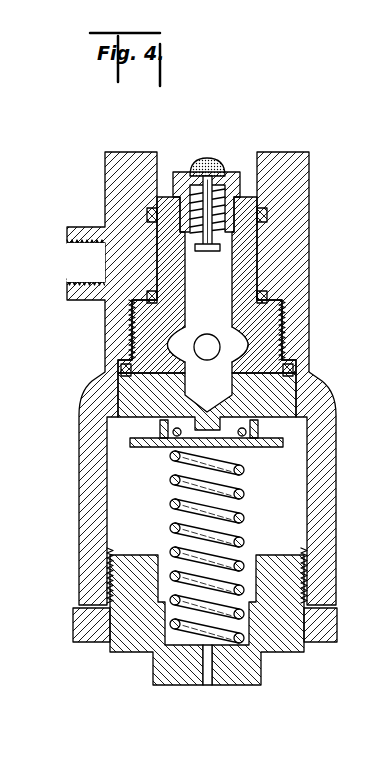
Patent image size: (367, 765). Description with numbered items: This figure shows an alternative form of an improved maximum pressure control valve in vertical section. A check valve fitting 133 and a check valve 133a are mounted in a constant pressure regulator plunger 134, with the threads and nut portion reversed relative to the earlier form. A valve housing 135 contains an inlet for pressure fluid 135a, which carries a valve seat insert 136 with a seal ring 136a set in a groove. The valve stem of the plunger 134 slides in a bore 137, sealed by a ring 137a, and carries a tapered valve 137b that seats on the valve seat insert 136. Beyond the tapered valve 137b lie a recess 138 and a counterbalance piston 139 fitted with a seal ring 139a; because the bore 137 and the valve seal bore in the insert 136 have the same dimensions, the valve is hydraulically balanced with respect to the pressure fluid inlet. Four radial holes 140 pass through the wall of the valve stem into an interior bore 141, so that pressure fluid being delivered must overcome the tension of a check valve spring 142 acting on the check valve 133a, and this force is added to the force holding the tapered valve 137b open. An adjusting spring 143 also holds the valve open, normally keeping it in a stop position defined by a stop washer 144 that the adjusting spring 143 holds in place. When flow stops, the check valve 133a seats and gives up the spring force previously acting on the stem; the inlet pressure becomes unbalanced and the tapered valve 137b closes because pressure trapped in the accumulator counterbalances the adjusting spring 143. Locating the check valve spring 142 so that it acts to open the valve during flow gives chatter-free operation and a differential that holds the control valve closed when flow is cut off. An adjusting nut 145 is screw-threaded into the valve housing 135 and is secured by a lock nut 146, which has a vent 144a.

The check valve fitting 133 is at (244, 190).
The check valve 133a is at (206, 166).
The constant pressure regulator plunger 134 is at (262, 240).
The valve housing 135 is at (298, 262).
The inlet for pressure fluid 135a is at (92, 257).
The valve seat insert 136 is at (270, 318).
The seal ring 136a is at (292, 372).
The bore 137 is at (258, 170).
The ring 137a is at (150, 220).
The tapered valve 137b is at (266, 293).
The recess 138 is at (166, 341).
The counterbalance piston 139 is at (177, 403).
The seal ring 139a is at (251, 384).
The radial holes 140 is at (212, 340).
The interior bore 141 is at (188, 287).
The check valve spring 142 is at (208, 229).
The adjusting spring 143 is at (244, 478).
The stop washer 144 is at (153, 445).
The vent 144a is at (207, 686).
The adjusting nut 145 is at (142, 630).
The lock nut 146 is at (87, 622).